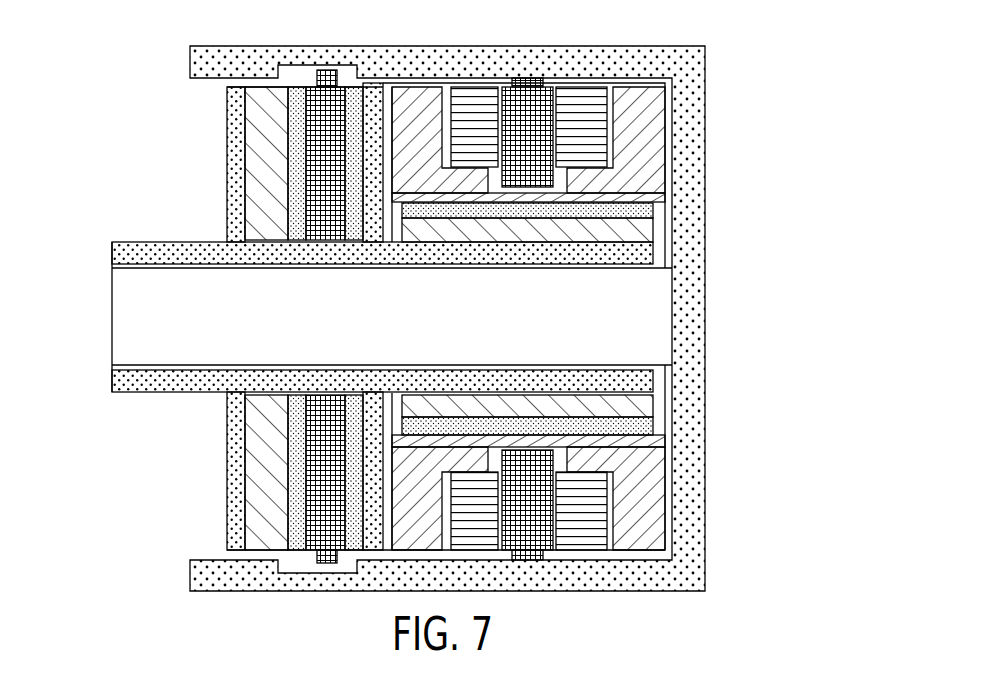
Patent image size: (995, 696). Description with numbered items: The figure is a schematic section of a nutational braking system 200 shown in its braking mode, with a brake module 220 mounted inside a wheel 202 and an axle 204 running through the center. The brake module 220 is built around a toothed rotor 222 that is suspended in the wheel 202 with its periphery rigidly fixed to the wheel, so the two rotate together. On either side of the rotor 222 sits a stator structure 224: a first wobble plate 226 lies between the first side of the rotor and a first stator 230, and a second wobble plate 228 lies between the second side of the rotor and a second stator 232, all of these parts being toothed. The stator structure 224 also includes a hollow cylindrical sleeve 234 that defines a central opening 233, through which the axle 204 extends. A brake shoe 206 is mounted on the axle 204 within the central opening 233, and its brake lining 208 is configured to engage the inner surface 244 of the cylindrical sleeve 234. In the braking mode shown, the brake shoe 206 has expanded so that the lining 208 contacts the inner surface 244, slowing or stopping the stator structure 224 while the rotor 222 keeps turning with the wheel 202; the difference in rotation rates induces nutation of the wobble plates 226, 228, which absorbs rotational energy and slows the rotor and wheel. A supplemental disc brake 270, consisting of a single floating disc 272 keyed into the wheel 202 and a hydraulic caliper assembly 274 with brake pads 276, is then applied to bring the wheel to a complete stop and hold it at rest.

The braking system 200 is at (416, 343).
The wheel 202 is at (695, 150).
The axle 204 is at (125, 311).
The brake shoe 206 is at (643, 248).
The brake lining 208 is at (643, 215).
The brake module 220 is at (564, 343).
The rotor 222 is at (528, 102).
The stator structure 224 is at (569, 224).
The first wobble plate 226 is at (475, 100).
The second wobble plate 228 is at (583, 100).
The first stator 230 is at (415, 102).
The second stator 232 is at (643, 102).
The central opening 233 is at (395, 412).
The cylindrical sleeve 234 is at (445, 443).
The inner surface 244 is at (626, 428).
The disc brake 270 is at (276, 343).
The floating disc 272 is at (320, 93).
The hydraulic caliper assembly 274 is at (237, 156).
The brake pads 276 is at (280, 103).